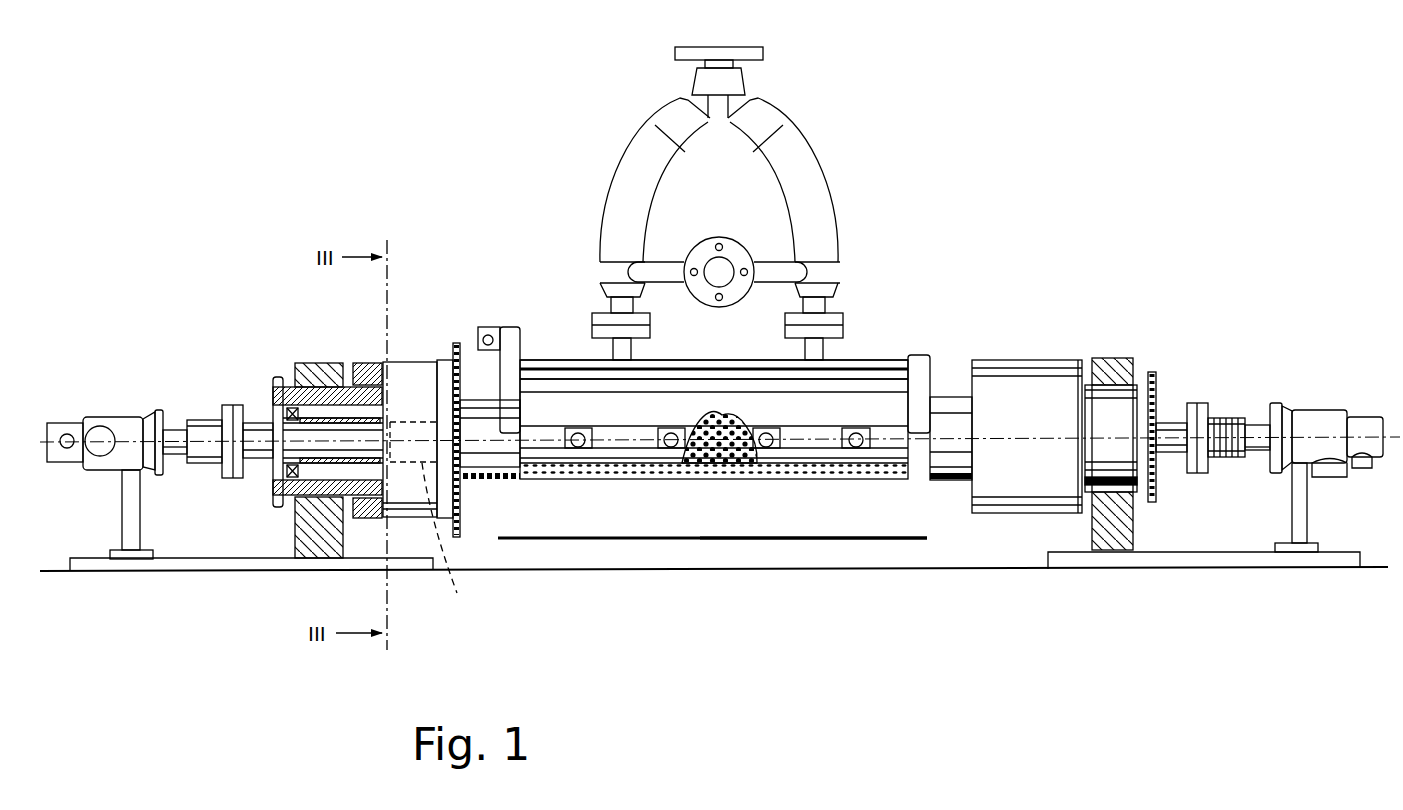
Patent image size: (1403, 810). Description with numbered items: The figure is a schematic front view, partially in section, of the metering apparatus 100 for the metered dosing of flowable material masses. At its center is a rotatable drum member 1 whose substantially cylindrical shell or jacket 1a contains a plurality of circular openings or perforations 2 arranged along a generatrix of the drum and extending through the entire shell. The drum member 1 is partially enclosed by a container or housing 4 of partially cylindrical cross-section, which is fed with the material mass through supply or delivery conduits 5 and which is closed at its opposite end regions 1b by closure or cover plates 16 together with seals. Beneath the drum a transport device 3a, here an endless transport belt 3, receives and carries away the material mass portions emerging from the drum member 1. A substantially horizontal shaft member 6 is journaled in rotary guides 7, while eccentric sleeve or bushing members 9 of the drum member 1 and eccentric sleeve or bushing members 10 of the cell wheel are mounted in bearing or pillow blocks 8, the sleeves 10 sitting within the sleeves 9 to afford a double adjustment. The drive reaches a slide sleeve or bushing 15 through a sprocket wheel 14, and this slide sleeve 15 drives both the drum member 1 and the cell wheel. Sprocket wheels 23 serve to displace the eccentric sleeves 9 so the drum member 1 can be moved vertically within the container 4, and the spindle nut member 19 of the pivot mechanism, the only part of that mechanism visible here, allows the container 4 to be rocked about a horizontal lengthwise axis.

The metering apparatus 100 is at (548, 156).
The drum member 1 is at (610, 483).
The cylindrical shell or jacket 1a is at (828, 480).
The end regions of the container 1b is at (527, 358).
The openings or perforations 2 is at (737, 480).
The endless transport belt 3 is at (845, 543).
The transport device 3a is at (803, 543).
The container or housing 4 is at (865, 357).
The supply or delivery conduits 5 is at (817, 203).
The horizontal shaft member 6 is at (177, 423).
The rotary guides 7 is at (98, 422).
The bearing or pillow blocks 8 is at (283, 582).
The eccentric sleeve or bushing members of the drum member 9 is at (348, 385).
The eccentric sleeve or bushing members of the cell wheel 10 is at (293, 385).
The sprocket wheel 14 is at (455, 337).
The slide sleeve or bushing 15 is at (446, 541).
The closure or cover plates 16 is at (514, 328).
The spindle nut member 19 is at (490, 325).
The sprocket wheels 23 is at (1153, 370).